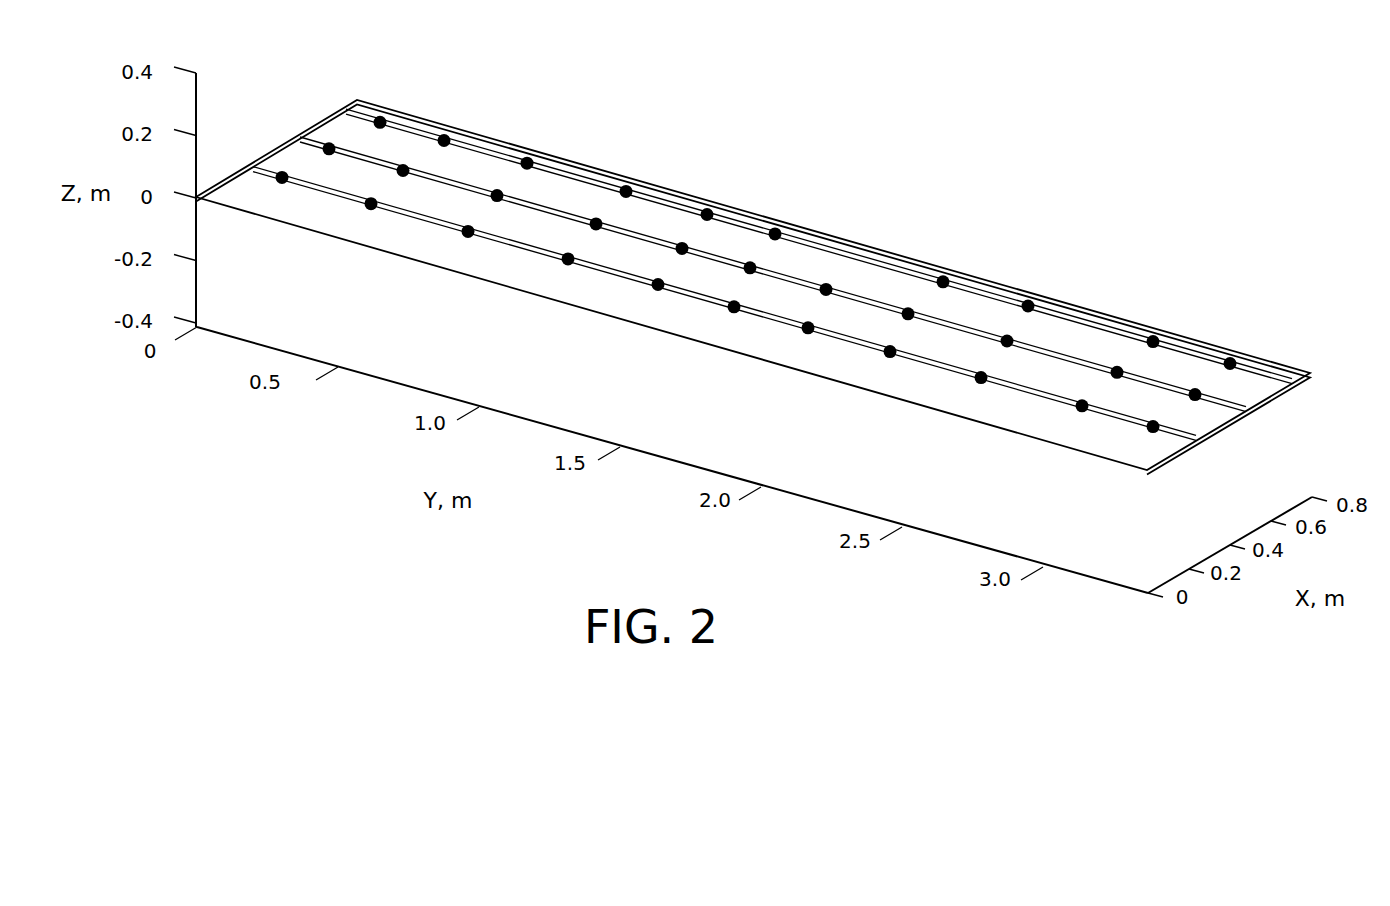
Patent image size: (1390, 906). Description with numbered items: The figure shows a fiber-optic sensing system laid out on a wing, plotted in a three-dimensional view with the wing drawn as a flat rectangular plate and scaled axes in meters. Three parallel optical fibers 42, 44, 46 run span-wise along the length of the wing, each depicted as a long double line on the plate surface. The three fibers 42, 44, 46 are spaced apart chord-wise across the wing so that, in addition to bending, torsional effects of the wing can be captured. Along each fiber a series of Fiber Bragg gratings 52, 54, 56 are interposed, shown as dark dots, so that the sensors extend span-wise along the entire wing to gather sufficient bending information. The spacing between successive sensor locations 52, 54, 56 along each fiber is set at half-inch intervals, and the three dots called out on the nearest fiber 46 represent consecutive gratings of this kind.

The optical fiber 42 is at (805, 241).
The optical fiber 44 is at (815, 283).
The optical fiber 46 is at (724, 304).
The Fiber Bragg grating 52 is at (468, 238).
The Fiber Bragg grating 54 is at (568, 264).
The Fiber Bragg grating 56 is at (657, 289).